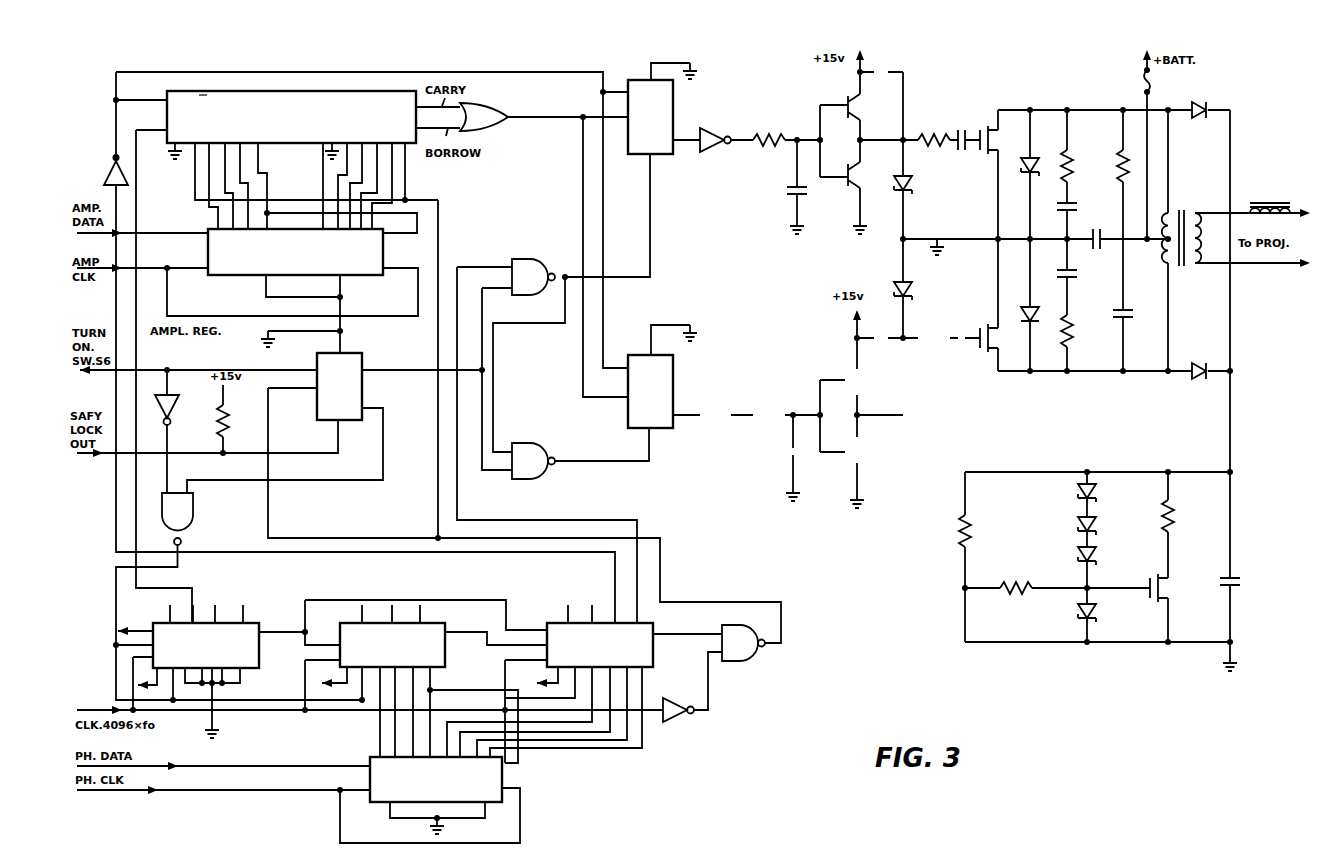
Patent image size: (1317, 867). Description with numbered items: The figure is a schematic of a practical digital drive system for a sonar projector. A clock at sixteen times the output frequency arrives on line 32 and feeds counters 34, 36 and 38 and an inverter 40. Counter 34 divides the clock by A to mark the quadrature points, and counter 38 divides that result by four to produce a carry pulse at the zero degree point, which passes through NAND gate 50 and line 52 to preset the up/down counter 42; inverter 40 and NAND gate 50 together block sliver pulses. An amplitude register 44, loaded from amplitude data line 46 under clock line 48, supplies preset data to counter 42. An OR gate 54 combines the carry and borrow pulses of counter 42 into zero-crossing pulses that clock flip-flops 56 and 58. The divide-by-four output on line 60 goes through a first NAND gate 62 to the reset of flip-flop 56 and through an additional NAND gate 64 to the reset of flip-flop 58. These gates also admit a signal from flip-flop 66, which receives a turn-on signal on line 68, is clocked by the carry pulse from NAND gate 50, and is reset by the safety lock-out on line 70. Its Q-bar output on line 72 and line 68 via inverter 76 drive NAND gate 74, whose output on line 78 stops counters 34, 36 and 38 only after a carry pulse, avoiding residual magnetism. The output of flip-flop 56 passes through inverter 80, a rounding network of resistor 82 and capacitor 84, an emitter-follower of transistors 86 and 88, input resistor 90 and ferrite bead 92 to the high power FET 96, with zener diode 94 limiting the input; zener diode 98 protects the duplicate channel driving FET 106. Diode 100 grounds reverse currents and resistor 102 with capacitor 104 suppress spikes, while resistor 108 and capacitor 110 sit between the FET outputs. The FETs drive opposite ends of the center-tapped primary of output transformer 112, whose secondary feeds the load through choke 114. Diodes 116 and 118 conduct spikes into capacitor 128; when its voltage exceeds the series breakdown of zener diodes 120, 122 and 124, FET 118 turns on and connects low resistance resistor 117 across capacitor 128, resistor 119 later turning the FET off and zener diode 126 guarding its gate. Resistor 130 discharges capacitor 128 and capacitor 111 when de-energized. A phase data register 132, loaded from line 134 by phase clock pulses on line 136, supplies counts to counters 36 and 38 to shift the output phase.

The line 32 is at (240, 712).
The counter 34 is at (259, 668).
The counter 36 is at (445, 660).
The counter 38 is at (653, 648).
The inverter 40 is at (680, 722).
The presettable up/down counter 42 is at (298, 148).
The amplitude register 44 is at (366, 276).
The amplitude data line 46 is at (182, 225).
The clock line 48 is at (184, 275).
The NAND gate 50 is at (742, 663).
The line 52 is at (438, 213).
The OR gate 54 is at (498, 114).
The flip-flop 56 is at (653, 135).
The flip-flop 58 is at (653, 410).
The line 60 is at (590, 518).
The first NAND gate 62 is at (530, 259).
The additional NAND gate 64 is at (530, 441).
The flip-flop 66 is at (342, 405).
The line 68 is at (167, 367).
The line 70 is at (186, 451).
The line 72 is at (383, 455).
The NAND gate 74 is at (190, 522).
The inverter 76 is at (168, 468).
The line 78 is at (178, 562).
The inverter 80 is at (710, 130).
The resistor 82 is at (764, 132).
The capacitor 84 is at (778, 197).
The transistor 86 is at (844, 100).
The transistor 88 is at (840, 194).
The input resistor 90 is at (929, 134).
The ferrite bead 92 is at (961, 152).
The zener diode 94 is at (912, 192).
The high power field effect transistor 96 is at (978, 118).
The zener diode 98 is at (892, 280).
The diode 100 is at (1038, 156).
The resistor 102 is at (1075, 154).
The capacitor 104 is at (1080, 212).
The field effect transistor 106 is at (976, 328).
The resistor 108 is at (1122, 164).
The capacitor 110 is at (1135, 304).
The capacitor 111 is at (1094, 252).
The output transformer 112 is at (1174, 216).
The choke 114 is at (1276, 200).
The diode 116 is at (1201, 102).
The resistor 117 is at (1162, 518).
The diode / FET 118 is at (1192, 362).
The resistor 119 is at (1024, 576).
The zener diode 120 is at (1074, 494).
The zener diode 122 is at (1074, 527).
The zener diode 124 is at (1074, 558).
The zener diode 126 is at (1074, 614).
The capacitor 128 is at (1210, 582).
The resistor 130 is at (960, 528).
The phase data register 132 is at (503, 780).
The line 134 is at (272, 765).
The line 136 is at (272, 790).